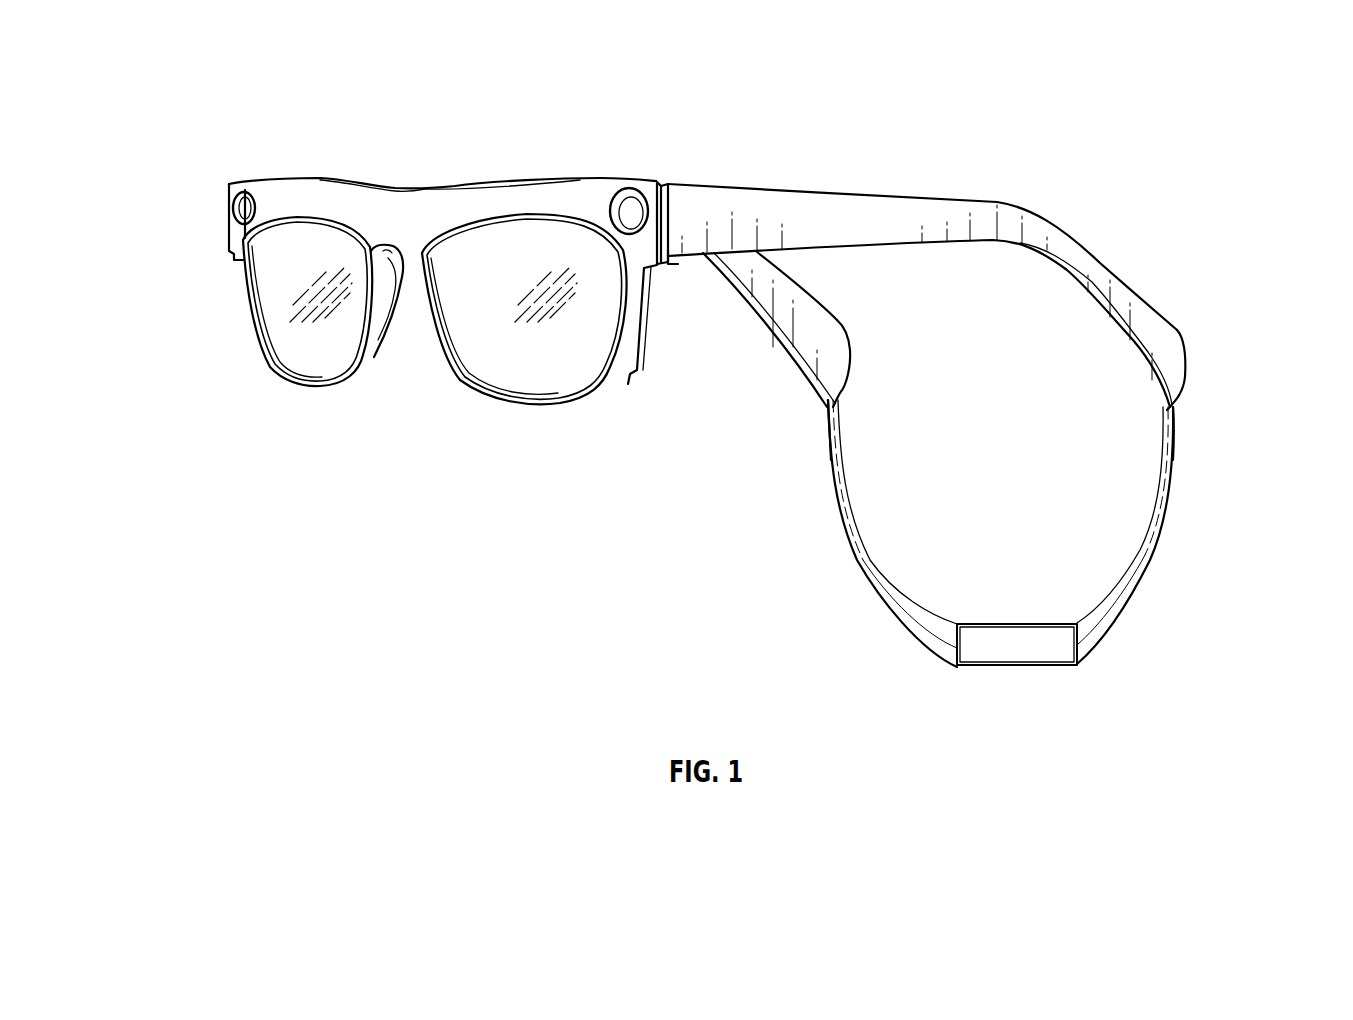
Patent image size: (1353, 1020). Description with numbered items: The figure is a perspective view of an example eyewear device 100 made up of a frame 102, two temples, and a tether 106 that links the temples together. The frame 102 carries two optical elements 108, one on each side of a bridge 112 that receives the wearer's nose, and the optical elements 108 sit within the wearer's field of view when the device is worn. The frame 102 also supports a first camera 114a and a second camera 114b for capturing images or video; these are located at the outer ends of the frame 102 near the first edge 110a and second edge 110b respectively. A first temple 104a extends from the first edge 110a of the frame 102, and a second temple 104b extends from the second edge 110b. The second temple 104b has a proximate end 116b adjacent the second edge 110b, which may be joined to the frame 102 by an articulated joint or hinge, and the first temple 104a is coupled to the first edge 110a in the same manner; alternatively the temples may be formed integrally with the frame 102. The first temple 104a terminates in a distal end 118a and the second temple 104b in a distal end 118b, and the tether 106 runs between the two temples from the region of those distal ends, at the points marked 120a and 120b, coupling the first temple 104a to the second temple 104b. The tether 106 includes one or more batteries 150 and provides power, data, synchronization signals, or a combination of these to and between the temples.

The eyewear device 100 is at (1161, 125).
The frame 102 is at (336, 181).
The first temple 104a is at (792, 364).
The second temple 104b is at (795, 187).
The tether 106 is at (846, 545).
The optical elements 108 is at (308, 346).
The first edge 110a is at (247, 182).
The second edge 110b is at (647, 183).
The bridge 112 is at (422, 187).
The first camera 114a is at (245, 207).
The second camera 114b is at (628, 210).
The proximate end 116b is at (668, 265).
The distal end 118a is at (848, 357).
The distal end 118b is at (1120, 352).
The left strap attachment 120a is at (829, 404).
The right strap attachment 120b is at (1175, 406).
The batteries 150 is at (955, 655).